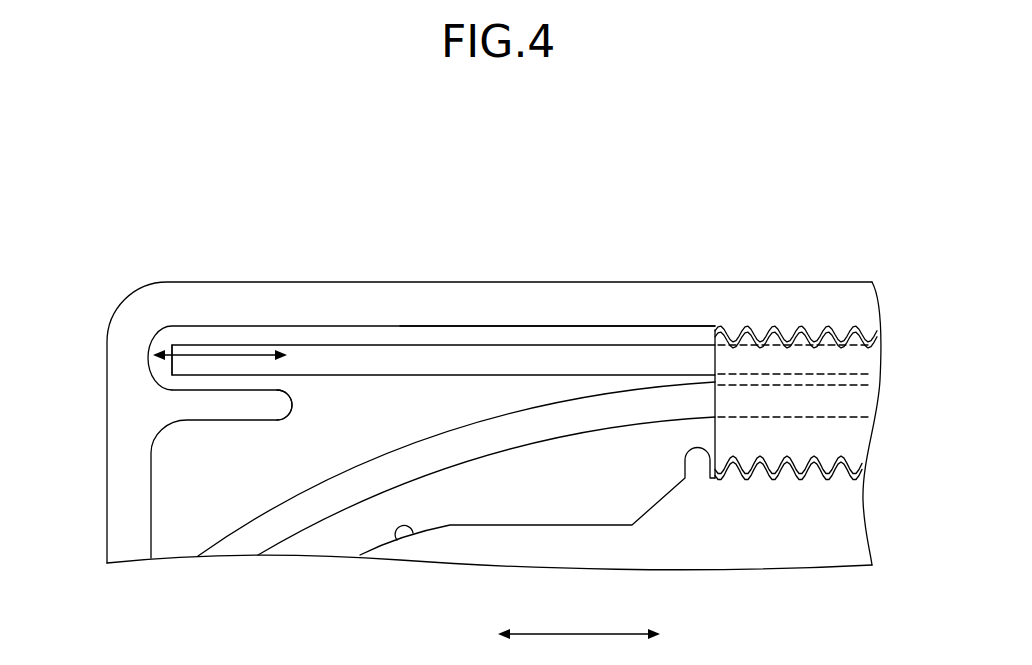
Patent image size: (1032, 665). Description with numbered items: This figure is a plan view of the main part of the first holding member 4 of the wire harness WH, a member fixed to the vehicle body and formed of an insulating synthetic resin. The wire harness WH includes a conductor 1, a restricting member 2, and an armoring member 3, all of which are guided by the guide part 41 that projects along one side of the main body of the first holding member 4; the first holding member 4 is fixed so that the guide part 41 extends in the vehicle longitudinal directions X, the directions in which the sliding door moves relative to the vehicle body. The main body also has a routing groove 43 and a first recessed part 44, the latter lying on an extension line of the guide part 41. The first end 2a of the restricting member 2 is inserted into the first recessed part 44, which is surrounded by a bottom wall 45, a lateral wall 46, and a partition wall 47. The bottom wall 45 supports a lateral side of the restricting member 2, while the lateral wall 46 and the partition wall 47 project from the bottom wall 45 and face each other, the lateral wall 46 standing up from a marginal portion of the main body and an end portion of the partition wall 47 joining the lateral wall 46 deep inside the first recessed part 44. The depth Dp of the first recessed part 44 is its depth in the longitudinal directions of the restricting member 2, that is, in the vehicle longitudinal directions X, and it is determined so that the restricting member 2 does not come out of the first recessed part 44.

The wire harness WH is at (509, 215).
The first holding member 4 is at (577, 273).
The conductor 1 is at (663, 407).
The restricting member 2 is at (613, 357).
The first end 2a is at (182, 367).
The armoring member 3 is at (715, 328).
The guide part 41 is at (812, 325).
The routing groove 43 is at (397, 540).
The first recessed part 44 is at (276, 382).
The bottom wall 45 is at (312, 333).
The lateral wall 46 is at (257, 300).
The partition wall 47 is at (205, 402).
The depth Dp is at (223, 352).
The vehicle longitudinal directions X is at (579, 623).